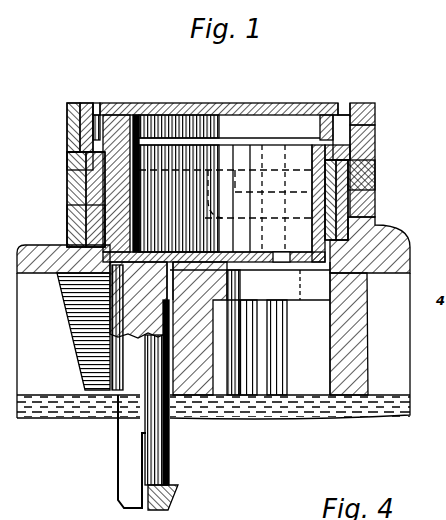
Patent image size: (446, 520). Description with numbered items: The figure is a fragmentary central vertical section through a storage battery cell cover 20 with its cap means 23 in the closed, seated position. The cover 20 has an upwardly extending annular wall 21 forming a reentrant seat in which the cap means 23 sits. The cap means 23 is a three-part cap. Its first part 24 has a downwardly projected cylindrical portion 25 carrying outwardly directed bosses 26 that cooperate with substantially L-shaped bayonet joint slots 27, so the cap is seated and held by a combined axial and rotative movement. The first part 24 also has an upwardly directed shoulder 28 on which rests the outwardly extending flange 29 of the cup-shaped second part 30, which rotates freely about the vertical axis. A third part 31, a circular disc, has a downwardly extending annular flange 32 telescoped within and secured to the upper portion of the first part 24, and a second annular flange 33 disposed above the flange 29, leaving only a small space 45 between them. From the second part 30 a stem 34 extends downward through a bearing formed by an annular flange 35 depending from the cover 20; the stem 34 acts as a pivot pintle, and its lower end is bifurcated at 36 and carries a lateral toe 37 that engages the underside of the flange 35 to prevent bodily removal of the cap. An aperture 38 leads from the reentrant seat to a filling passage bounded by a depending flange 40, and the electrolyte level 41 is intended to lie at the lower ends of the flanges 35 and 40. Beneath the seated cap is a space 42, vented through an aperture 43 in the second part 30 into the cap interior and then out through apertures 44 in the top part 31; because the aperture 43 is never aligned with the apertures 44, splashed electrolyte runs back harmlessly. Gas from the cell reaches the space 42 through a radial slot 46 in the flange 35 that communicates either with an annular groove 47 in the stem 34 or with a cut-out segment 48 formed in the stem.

The cover 20 is at (396, 252).
The annular wall 21 is at (382, 183).
The cap means 23 is at (114, 95).
The first part 24 is at (377, 140).
The cylindrical portion 25 is at (312, 228).
The bosses 26 is at (83, 205).
The bayonet joint slots 27 is at (280, 186).
The shoulder 28 is at (67, 170).
The flange 29 is at (67, 158).
The second part 30 is at (100, 225).
The third part 31 is at (283, 113).
The annular flange 32 is at (376, 118).
The annular flange 33 is at (140, 113).
The stem 34 is at (170, 440).
The annular flange 35 is at (186, 418).
The bifurcation 36 is at (140, 457).
The toe 37 is at (178, 494).
The aperture 38 is at (238, 290).
The flange 40 is at (360, 348).
The electrolyte level 41 is at (386, 393).
The space 42 is at (312, 290).
The aperture 43 is at (283, 290).
The apertures 44 is at (93, 102).
The space 45 is at (210, 140).
The radial slot 46 is at (83, 313).
The annular groove 47 is at (162, 292).
The cut-out segment 48 is at (115, 357).